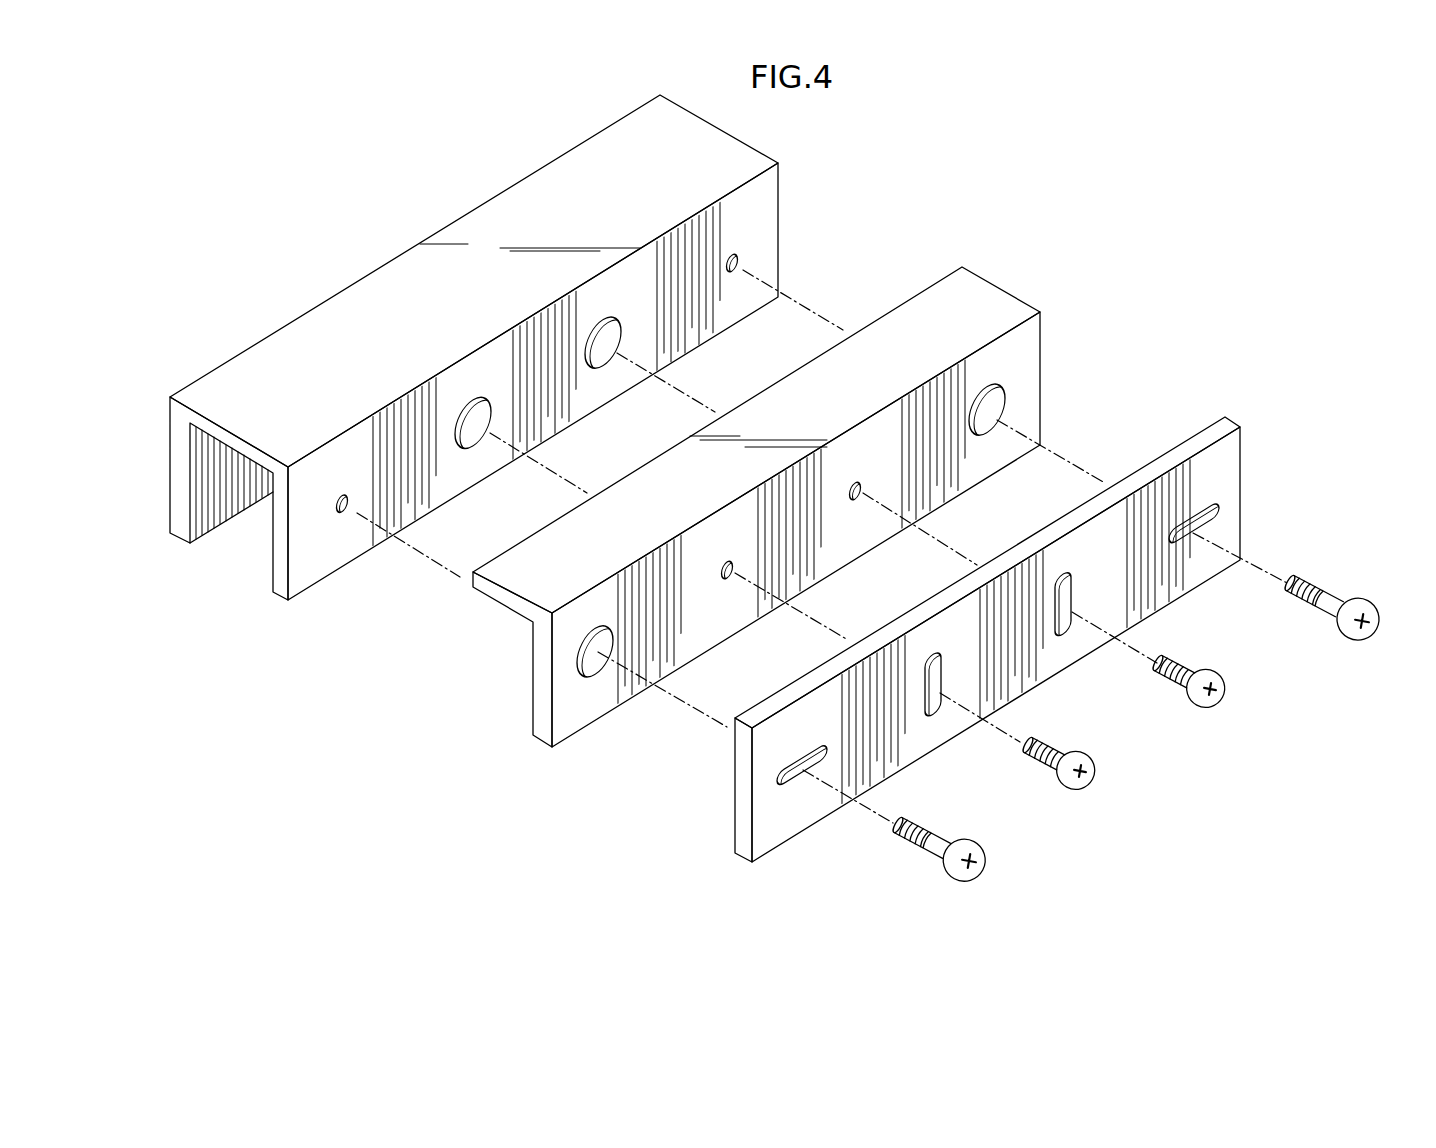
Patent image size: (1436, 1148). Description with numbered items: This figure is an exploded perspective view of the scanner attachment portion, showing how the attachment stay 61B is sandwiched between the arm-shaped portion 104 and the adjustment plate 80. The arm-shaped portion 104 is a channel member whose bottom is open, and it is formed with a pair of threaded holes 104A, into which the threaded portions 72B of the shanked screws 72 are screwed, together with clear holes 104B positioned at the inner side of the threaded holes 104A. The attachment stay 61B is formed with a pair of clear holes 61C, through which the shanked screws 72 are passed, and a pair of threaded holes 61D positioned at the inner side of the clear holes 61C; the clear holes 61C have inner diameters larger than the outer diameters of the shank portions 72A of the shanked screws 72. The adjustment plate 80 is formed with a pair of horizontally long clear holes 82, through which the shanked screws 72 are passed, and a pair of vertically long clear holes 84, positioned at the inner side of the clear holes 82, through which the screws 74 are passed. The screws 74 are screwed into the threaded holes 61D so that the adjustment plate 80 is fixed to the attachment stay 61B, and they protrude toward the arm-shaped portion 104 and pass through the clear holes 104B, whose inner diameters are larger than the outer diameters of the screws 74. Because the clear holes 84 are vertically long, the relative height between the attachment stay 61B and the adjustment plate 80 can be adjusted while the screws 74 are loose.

The arm-shaped portion 104 is at (280, 570).
The threaded holes 104A is at (346, 508).
The clear holes 104B is at (475, 443).
The attachment stay 61B is at (542, 718).
The clear holes 61C is at (600, 660).
The threaded holes 61D is at (732, 577).
The adjustment plate 80 is at (743, 833).
The horizontally long clear holes 82 is at (798, 778).
The vertically long clear holes 84 is at (935, 710).
The shanked screws 72 is at (1122, 742).
The shank portions 72A is at (930, 852).
The threaded portions 72B is at (903, 836).
The screws 74 is at (1066, 793).